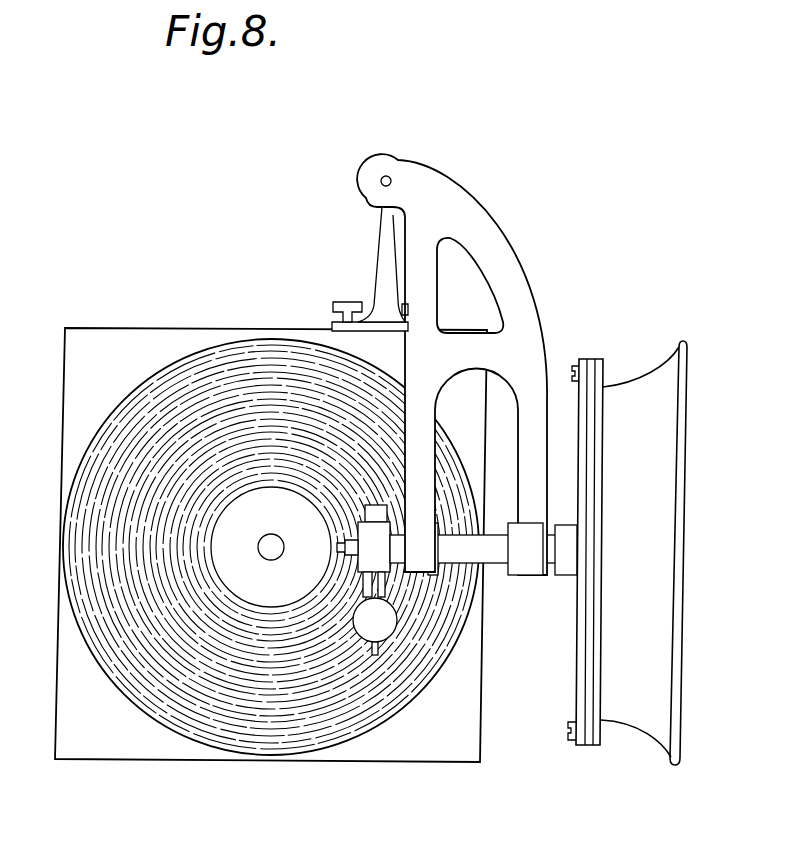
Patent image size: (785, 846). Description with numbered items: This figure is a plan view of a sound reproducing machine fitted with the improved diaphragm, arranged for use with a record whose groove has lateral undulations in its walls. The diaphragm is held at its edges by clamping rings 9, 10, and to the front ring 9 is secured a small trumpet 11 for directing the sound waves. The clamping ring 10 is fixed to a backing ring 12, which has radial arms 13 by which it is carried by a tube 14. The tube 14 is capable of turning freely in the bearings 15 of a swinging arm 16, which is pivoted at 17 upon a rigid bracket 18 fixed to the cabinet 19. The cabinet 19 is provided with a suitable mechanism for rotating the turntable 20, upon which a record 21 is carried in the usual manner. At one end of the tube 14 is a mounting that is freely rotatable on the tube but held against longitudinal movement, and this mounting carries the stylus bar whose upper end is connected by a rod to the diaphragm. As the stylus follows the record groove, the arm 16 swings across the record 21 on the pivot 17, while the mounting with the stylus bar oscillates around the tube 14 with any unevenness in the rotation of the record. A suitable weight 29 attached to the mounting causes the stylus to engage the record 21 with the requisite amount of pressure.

The clamping ring 9 is at (606, 376).
The clamping ring 10 is at (593, 370).
The trumpet 11 is at (697, 553).
The backing ring 12 is at (582, 429).
The radial arms 13 is at (567, 548).
The tube 14 is at (487, 540).
The bearings 15 is at (474, 387).
The swinging arm 16 is at (474, 358).
The pivot 17 is at (392, 177).
The bracket 18 is at (384, 256).
The cabinet 19 is at (193, 343).
The turntable 20 is at (118, 408).
The record 21 is at (128, 447).
The weight 29 is at (383, 627).